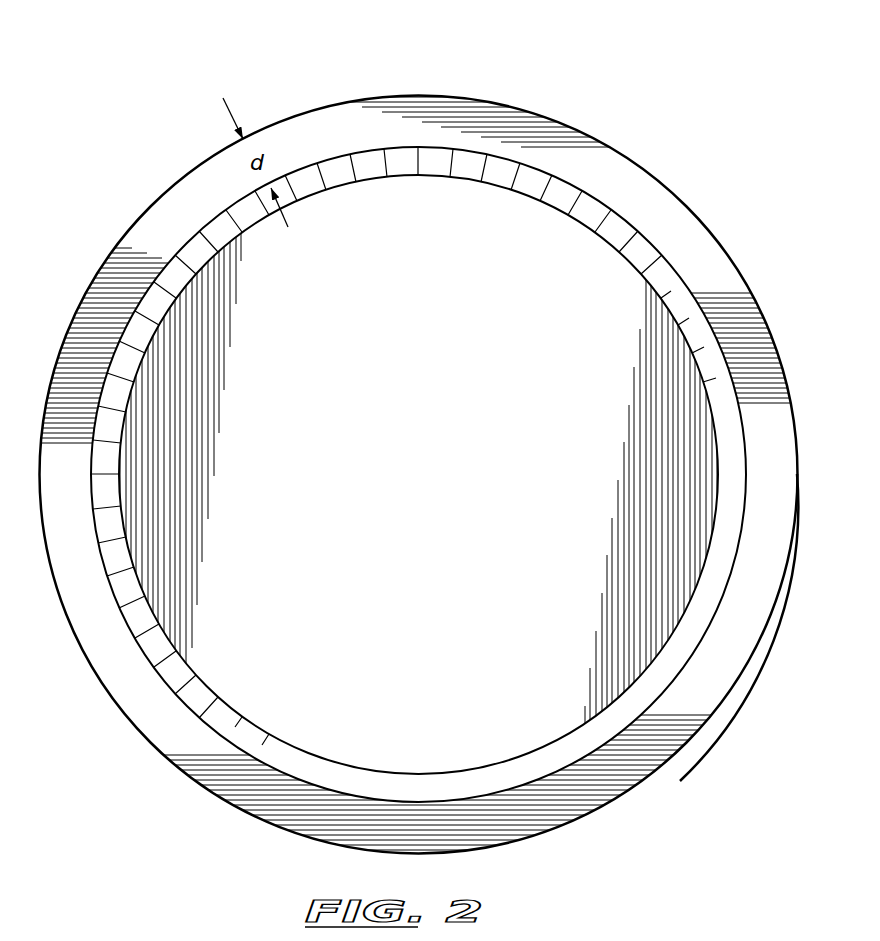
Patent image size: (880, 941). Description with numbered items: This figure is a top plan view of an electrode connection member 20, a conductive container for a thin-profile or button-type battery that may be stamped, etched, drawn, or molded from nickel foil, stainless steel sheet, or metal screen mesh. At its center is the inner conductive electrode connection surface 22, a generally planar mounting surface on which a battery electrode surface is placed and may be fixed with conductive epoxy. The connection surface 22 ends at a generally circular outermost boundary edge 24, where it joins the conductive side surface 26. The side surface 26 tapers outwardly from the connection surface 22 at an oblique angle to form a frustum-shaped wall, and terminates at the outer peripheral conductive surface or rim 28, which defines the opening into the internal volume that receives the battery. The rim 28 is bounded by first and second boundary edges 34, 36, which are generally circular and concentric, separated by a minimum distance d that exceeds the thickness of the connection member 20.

The connection member 20 is at (183, 840).
The inner conductive electrode connection surface 22 is at (404, 486).
The outermost boundary edge 24 is at (602, 243).
The side surface 26 is at (367, 167).
The outer peripheral conductive surface 28 is at (50, 494).
The first boundary edge 34 is at (714, 611).
The second boundary edge 36 is at (748, 660).